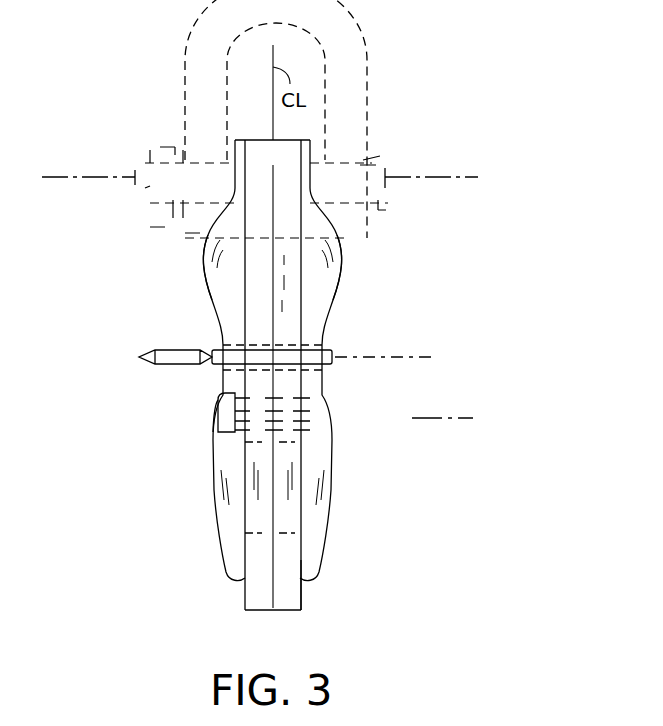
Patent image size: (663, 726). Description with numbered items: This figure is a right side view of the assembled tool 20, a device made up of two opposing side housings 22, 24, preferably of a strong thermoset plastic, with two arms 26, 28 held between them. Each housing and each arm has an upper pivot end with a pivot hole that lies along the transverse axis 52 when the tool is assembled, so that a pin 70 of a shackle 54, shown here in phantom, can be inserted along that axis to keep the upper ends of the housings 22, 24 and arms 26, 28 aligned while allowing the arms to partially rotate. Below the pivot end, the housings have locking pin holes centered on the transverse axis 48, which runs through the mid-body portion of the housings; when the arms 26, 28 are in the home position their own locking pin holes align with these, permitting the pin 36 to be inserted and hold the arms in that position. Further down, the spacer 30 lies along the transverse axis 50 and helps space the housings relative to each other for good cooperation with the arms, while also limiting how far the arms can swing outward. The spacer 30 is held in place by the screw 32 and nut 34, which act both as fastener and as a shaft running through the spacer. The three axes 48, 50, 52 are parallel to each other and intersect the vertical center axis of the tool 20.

The tool 20 is at (372, 494).
The side housing 22 is at (211, 272).
The side housing 24 is at (334, 272).
The arm 26 is at (255, 612).
The arm 28 is at (290, 603).
The spacer 30 is at (283, 402).
The screw 32 is at (318, 418).
The nut 34 is at (216, 413).
The pin 36 is at (285, 358).
The transverse axis 48 is at (415, 357).
The transverse axis 50 is at (445, 418).
The transverse axis 52 is at (447, 177).
The shackle 54 is at (378, 85).
The pin 70 is at (148, 188).